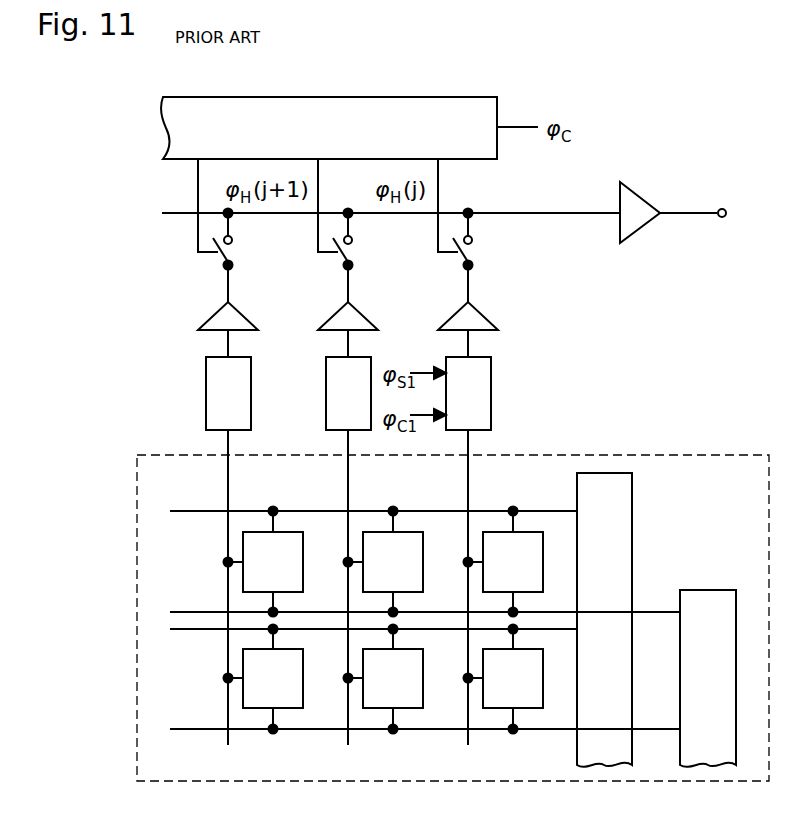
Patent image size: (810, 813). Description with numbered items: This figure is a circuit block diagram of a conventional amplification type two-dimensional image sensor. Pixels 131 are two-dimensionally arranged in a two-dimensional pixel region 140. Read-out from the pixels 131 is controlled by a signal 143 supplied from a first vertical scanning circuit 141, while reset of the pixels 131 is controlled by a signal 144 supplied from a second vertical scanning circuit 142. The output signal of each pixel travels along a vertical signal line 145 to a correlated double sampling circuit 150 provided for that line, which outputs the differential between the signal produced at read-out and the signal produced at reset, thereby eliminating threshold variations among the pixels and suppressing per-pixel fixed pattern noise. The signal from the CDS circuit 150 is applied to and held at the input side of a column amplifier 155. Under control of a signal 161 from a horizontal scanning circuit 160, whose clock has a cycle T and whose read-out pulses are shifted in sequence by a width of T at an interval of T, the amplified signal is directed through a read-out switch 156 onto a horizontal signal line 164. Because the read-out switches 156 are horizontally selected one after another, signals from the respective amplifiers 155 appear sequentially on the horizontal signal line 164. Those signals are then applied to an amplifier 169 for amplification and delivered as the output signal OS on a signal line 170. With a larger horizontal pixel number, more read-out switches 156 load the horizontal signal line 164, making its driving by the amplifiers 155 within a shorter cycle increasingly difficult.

The pixel 131 is at (493, 531).
The two-dimensional pixel region 140 is at (722, 453).
The first vertical scanning circuit 141 is at (634, 496).
The second vertical scanning circuit 142 is at (718, 589).
The read-out control signal 143 is at (548, 510).
The reset control signal 144 is at (655, 610).
The vertical signal line 145 is at (467, 477).
The correlated double sampling (CDS) circuit 150 is at (492, 389).
The column amplifier 155 is at (488, 313).
The read-out switch 156 is at (477, 265).
The horizontal scanning circuit 160 is at (470, 96).
The horizontal scanning signal 161 is at (438, 181).
The horizontal signal line 164 is at (560, 212).
The amplifier 169 is at (643, 200).
The signal line 170 is at (686, 215).